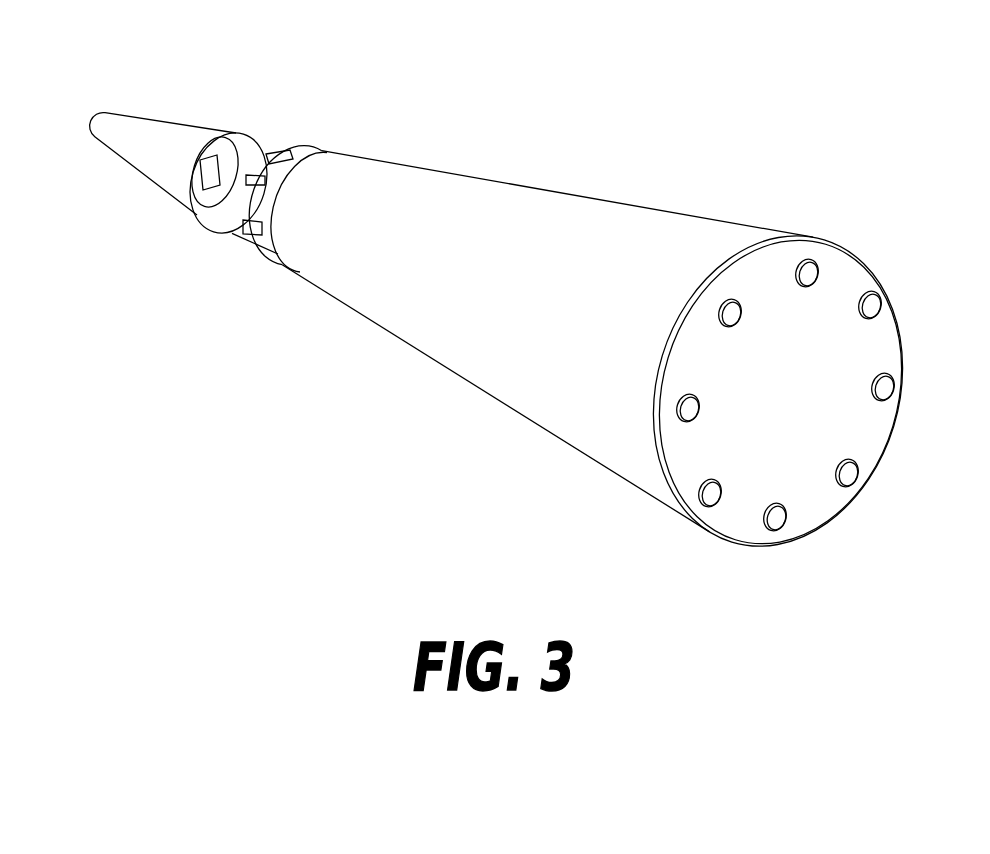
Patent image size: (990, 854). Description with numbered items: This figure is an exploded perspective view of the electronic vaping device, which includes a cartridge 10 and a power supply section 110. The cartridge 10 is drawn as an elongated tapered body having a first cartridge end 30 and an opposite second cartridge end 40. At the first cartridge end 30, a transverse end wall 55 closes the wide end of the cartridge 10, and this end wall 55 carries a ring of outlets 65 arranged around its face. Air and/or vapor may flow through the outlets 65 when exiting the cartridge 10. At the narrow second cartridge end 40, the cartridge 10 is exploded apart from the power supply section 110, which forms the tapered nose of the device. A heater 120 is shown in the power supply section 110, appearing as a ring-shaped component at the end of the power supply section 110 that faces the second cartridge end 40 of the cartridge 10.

The cartridge 10 is at (648, 207).
The first cartridge end 30 is at (855, 233).
The second cartridge end 40 is at (325, 146).
The transverse end wall 55 is at (802, 480).
The outlets 65 is at (883, 304).
The power supply section 110 is at (180, 133).
The heater 120 is at (214, 163).